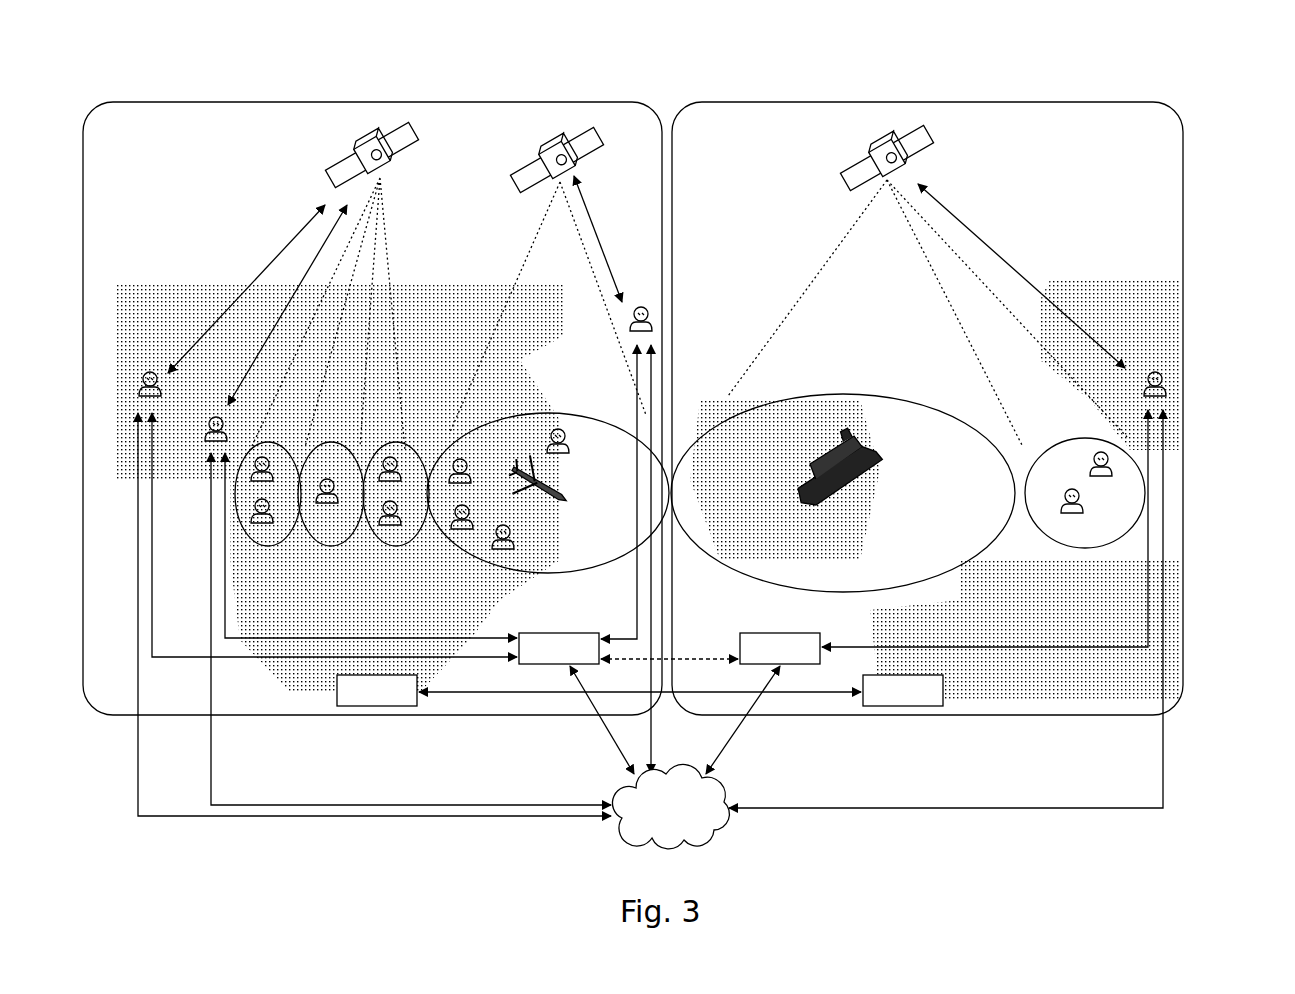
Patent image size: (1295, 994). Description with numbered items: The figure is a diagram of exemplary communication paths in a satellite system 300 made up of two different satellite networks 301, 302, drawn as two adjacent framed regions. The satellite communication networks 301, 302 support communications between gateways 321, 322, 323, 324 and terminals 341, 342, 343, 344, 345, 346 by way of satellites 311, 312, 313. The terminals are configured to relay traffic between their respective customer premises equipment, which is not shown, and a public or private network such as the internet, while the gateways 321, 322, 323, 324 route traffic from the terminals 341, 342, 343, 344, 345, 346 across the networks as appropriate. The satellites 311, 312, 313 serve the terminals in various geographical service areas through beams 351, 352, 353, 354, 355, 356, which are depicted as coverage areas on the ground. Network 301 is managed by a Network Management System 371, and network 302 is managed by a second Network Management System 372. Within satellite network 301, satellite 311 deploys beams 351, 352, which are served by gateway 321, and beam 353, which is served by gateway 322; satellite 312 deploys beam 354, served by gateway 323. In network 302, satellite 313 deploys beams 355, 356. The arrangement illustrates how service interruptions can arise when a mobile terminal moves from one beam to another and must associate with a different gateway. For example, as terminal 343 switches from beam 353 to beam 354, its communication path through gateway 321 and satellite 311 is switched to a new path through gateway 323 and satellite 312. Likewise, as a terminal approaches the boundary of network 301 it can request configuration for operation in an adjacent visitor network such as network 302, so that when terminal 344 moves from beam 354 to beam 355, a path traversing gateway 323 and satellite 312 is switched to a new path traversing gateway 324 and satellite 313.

The satellite communication system 300 is at (1282, 37).
The satellite network 301 is at (227, 101).
The satellite network 302 is at (770, 101).
The satellite 311 is at (338, 160).
The satellite 312 is at (540, 152).
The satellite 313 is at (862, 160).
The gateway 321 is at (140, 380).
The gateway 322 is at (206, 447).
The gateway 323 is at (656, 306).
The gateway 324 is at (1150, 368).
The terminal 341 is at (245, 520).
The terminal 342 is at (326, 517).
The terminal 343 is at (411, 524).
The terminal 344 is at (580, 542).
The terminal 345 is at (795, 528).
The terminal 346 is at (1070, 532).
The beam 351 is at (279, 442).
The beam 352 is at (333, 442).
The beam 353 is at (395, 442).
The beam 354 is at (556, 415).
The beam 355 is at (860, 392).
The beam 356 is at (1055, 440).
The Network Management System 371 is at (370, 707).
The Network Management System 372 is at (903, 707).